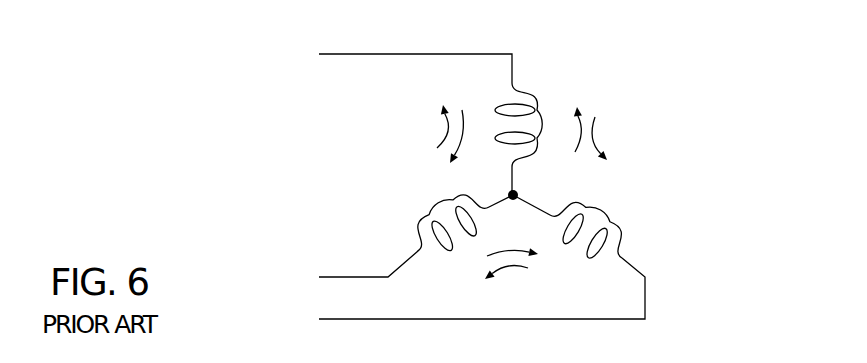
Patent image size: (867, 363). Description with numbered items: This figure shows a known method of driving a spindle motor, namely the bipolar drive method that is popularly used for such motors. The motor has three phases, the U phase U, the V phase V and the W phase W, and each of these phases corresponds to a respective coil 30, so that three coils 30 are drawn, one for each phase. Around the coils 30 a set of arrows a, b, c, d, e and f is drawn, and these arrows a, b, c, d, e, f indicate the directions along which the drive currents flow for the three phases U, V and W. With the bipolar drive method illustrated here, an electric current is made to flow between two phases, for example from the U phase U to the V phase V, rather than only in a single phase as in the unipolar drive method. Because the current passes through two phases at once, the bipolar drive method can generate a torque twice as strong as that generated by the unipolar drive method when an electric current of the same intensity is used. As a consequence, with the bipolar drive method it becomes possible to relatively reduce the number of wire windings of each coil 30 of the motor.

The coils 30 is at (534, 107).
The U phase U is at (400, 63).
The V phase V is at (354, 271).
The W phase W is at (465, 296).
The arrow a is at (455, 137).
The arrow b is at (513, 268).
The arrow c is at (580, 150).
The arrow d is at (447, 136).
The arrow e is at (512, 250).
The arrow f is at (595, 137).